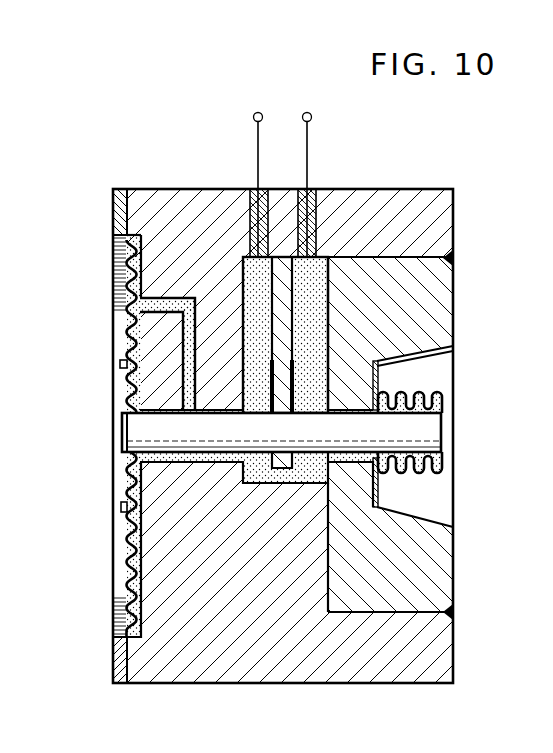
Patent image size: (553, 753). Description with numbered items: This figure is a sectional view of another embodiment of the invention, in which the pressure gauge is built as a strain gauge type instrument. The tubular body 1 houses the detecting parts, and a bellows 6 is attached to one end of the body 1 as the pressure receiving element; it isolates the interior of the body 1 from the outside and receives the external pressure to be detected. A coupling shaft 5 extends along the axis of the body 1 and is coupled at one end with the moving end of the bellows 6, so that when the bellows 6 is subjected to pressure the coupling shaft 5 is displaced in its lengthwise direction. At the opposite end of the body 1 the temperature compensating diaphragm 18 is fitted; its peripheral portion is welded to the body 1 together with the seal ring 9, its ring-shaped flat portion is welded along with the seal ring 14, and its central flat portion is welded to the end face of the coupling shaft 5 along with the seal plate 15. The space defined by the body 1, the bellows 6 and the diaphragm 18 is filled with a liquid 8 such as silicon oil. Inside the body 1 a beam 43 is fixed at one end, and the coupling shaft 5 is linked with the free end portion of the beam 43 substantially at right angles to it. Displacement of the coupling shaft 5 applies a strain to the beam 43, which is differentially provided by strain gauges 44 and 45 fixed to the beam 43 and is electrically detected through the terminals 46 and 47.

The body 1 is at (443, 227).
The coupling shaft 5 is at (430, 435).
The bellows 6 is at (438, 398).
The liquid 8 is at (258, 325).
The seal ring 9 is at (113, 213).
The seal ring 14 is at (118, 504).
The seal plate 15 is at (120, 431).
The temperature compensating diaphragm 18 is at (127, 285).
The beam 43 is at (287, 303).
The strain gauge 44 is at (323, 377).
The strain gauge 45 is at (292, 378).
The terminal 46 is at (313, 108).
The terminal 47 is at (262, 108).